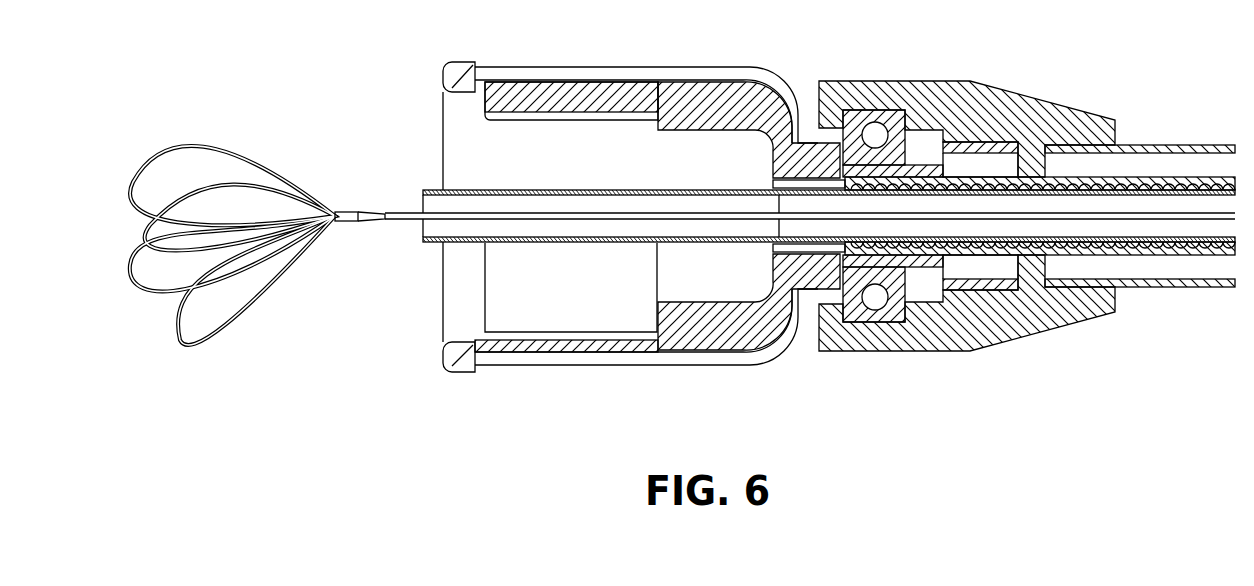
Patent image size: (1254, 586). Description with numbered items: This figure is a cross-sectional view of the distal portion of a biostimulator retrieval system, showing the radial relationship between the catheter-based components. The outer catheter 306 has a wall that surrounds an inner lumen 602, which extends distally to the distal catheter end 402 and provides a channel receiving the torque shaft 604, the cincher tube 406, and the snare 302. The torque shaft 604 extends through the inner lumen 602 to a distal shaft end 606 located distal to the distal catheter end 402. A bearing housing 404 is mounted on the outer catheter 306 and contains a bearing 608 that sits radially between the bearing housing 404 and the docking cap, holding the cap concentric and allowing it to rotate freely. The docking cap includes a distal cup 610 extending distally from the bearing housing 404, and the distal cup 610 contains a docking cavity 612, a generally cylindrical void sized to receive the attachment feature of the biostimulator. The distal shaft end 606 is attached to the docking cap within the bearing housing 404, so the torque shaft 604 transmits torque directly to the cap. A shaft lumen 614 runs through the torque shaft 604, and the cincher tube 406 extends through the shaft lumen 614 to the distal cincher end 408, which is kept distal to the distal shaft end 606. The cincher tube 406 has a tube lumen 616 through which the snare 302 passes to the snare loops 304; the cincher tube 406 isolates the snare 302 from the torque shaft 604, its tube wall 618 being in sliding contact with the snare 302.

The snare loops 304 is at (160, 147).
The snare 302 is at (387, 220).
The distal cincher end 408 is at (423, 190).
The cincher tube 406 is at (605, 245).
The tube lumen 616 is at (522, 230).
The distal cup 610 is at (613, 358).
The docking cavity 612 is at (598, 100).
The distal shaft end 606 is at (800, 345).
The tube wall 618 is at (697, 188).
The bearing housing 404 is at (980, 345).
The bearing 608 is at (895, 318).
The shaft lumen 614 is at (1022, 177).
The torque shaft 604 is at (1063, 176).
The distal catheter end 402 is at (1040, 283).
The inner lumen 602 is at (1197, 163).
The outer catheter 306 is at (1195, 288).